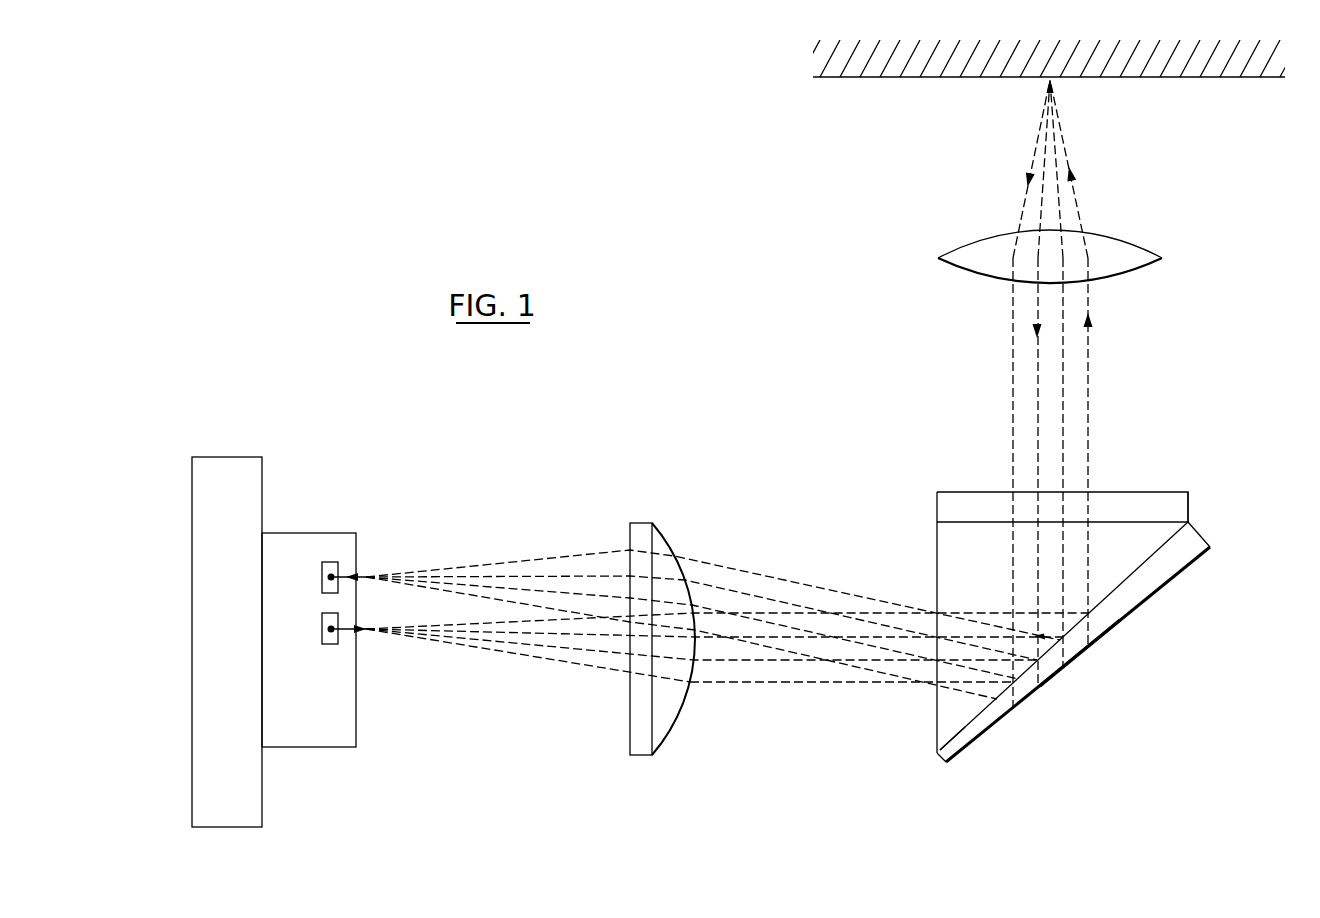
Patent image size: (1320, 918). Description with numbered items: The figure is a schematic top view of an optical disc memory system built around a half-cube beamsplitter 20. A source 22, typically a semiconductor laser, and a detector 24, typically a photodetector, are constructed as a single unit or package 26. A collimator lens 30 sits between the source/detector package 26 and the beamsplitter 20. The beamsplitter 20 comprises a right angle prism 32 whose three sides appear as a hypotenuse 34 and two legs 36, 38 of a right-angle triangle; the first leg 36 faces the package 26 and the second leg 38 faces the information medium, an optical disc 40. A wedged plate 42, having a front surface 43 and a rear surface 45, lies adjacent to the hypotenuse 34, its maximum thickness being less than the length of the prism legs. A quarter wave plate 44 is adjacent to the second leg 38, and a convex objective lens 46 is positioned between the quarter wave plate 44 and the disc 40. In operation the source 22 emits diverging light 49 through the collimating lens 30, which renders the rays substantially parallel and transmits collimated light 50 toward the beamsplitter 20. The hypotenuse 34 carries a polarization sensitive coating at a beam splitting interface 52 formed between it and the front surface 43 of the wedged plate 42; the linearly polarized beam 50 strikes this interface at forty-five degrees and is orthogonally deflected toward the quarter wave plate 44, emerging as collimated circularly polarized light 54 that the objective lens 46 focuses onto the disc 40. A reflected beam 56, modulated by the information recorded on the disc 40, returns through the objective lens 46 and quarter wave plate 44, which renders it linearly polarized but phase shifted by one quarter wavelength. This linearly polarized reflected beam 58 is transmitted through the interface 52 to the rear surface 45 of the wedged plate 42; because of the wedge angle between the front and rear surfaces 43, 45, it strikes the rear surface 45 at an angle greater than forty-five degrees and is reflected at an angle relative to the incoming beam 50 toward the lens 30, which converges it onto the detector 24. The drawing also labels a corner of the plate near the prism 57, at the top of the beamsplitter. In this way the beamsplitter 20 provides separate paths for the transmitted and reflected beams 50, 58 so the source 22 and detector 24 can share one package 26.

The half-cube beamsplitter 20 is at (1165, 685).
The source 22 is at (332, 645).
The detector 24 is at (331, 565).
The source/detector package 26 is at (342, 533).
The collimator lens 30 is at (643, 523).
The right angle prism 32 is at (928, 726).
The hypotenuse 34 is at (1130, 575).
The first leg 36 is at (937, 540).
The second leg 38 is at (1105, 523).
The optical disc 40 is at (1205, 78).
The wedged plate 42 is at (1182, 553).
The front surface 43 is at (957, 745).
The quarter wave plate 44 is at (937, 505).
The rear surface 45 is at (1077, 655).
The convex objective lens 46 is at (1137, 244).
The diverging light 49 is at (540, 668).
The collimated light 50 is at (775, 683).
The beam splitting interface 52 is at (1163, 540).
The collimated circularly polarized light 54 is at (1066, 153).
The reflected beam 56 is at (1030, 166).
The upper corner of plate 57 is at (1190, 523).
The linearly polarized reflected beam 58 is at (740, 568).